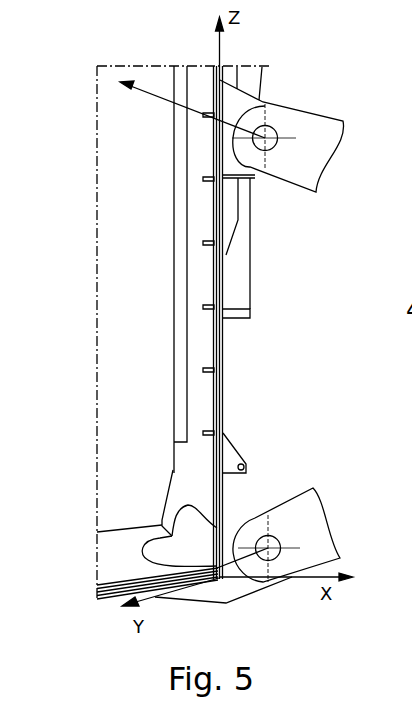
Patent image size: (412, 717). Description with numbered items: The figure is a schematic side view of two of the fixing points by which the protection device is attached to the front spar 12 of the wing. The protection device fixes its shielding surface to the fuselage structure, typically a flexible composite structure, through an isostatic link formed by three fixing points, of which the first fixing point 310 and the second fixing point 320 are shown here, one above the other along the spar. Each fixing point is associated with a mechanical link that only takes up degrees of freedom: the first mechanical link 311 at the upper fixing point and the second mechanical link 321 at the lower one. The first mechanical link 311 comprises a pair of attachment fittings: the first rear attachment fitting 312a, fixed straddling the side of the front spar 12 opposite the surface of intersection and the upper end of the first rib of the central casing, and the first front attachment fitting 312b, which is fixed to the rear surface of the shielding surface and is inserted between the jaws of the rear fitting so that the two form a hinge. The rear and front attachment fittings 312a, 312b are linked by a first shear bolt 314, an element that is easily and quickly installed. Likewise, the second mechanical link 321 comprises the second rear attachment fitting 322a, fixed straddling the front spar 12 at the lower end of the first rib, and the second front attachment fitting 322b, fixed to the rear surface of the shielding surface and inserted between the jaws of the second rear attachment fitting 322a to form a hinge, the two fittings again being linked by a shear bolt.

The front spar 12 is at (107, 128).
The first fixing point 310 is at (209, 63).
The first mechanical link 311 is at (272, 95).
The first rear attachment fitting 312a is at (230, 172).
The first front attachment fitting 312b is at (304, 145).
The first shear bolt 314 is at (278, 183).
The second fixing point 320 is at (249, 544).
The second mechanical link 321 is at (288, 594).
The second rear attachment fitting 322a is at (186, 505).
The second front attachment fitting 322b is at (330, 515).